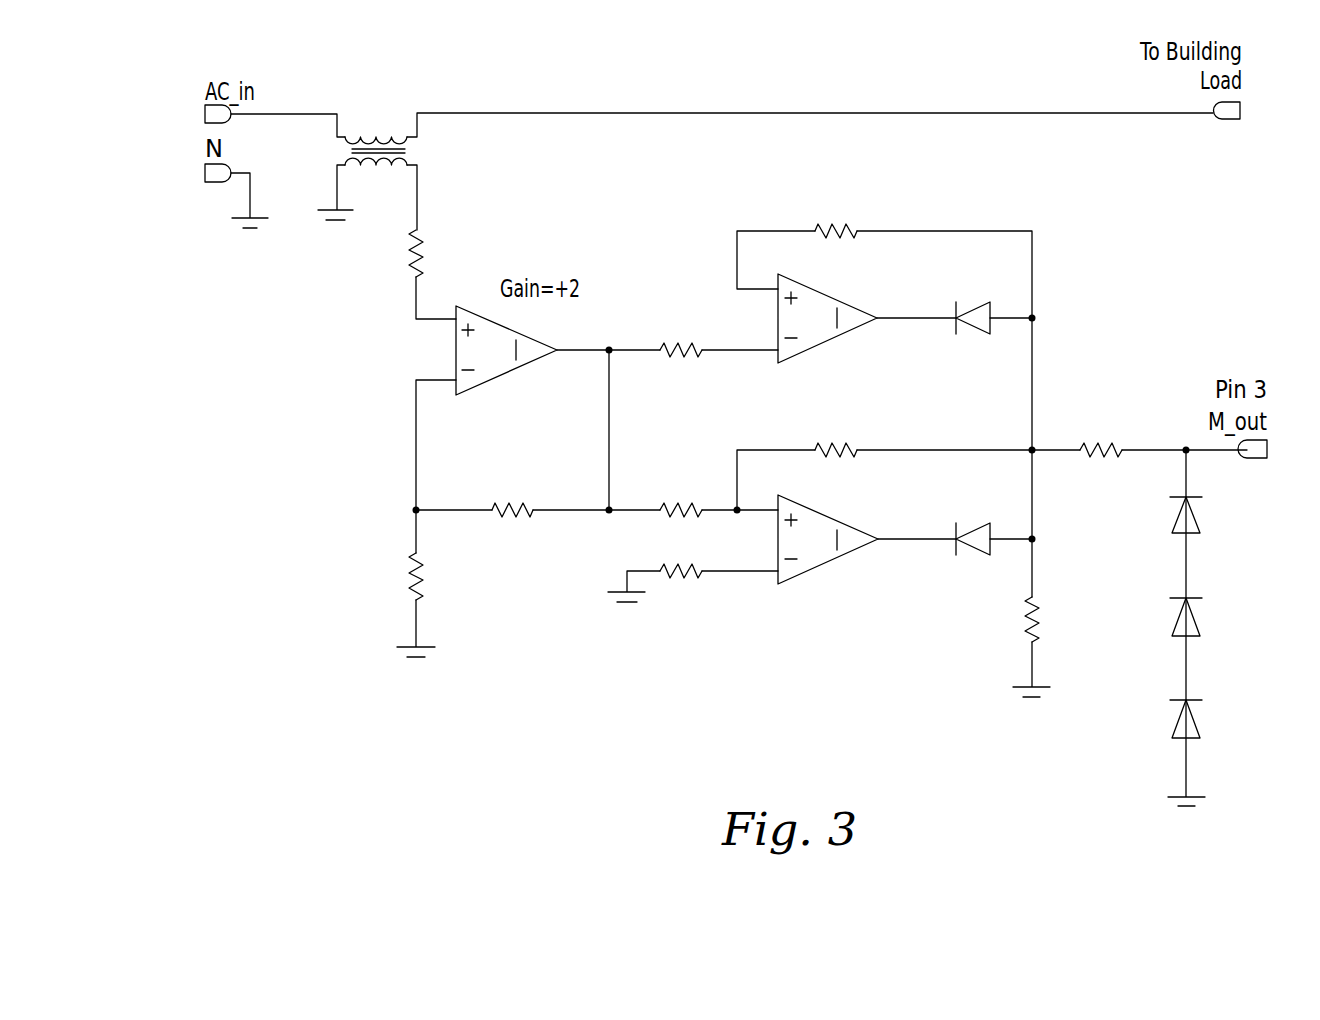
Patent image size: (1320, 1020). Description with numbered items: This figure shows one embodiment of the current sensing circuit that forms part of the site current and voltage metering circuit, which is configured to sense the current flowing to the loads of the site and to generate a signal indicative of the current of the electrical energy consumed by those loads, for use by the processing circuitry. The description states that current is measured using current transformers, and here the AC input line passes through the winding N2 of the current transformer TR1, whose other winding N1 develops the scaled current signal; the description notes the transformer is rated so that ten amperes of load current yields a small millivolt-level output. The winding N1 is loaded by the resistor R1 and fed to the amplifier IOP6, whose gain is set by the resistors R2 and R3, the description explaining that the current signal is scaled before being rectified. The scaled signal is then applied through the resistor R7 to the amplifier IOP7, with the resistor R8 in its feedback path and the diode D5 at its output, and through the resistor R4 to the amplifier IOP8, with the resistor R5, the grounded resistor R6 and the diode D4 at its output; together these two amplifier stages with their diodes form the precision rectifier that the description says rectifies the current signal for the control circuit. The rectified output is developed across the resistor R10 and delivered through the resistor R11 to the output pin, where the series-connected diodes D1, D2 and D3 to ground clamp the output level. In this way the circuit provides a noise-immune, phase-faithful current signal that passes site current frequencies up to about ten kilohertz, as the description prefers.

The current transformer 10A:333mV TR1 is at (389, 116).
The transformer secondary winding N1 is at (376, 177).
The transformer primary winding N2 is at (376, 125).
The resistor 5K R1 is at (450, 253).
The resistor 10K R2 is at (456, 576).
The resistor 10K R3 is at (518, 492).
The resistor 10K R4 is at (693, 492).
The resistor 10K R5 is at (848, 432).
The resistor 5K R6 is at (688, 589).
The resistor 1K R7 is at (687, 331).
The resistor 1K R8 is at (843, 213).
The resistor 10K R10 is at (1077, 619).
The resistor 100 R11 is at (1096, 432).
The operational amplifier (gain=+2) IOP6 is at (506, 361).
The operational amplifier IOP7 is at (827, 330).
The operational amplifier IOP8 is at (828, 550).
The diode 1N4148 D1 is at (1240, 531).
The diode 1N4148 D2 is at (1240, 633).
The diode 1N4148 D3 is at (1240, 734).
The diode 1N4148 D4 is at (961, 520).
The diode 1N4148 D5 is at (961, 299).